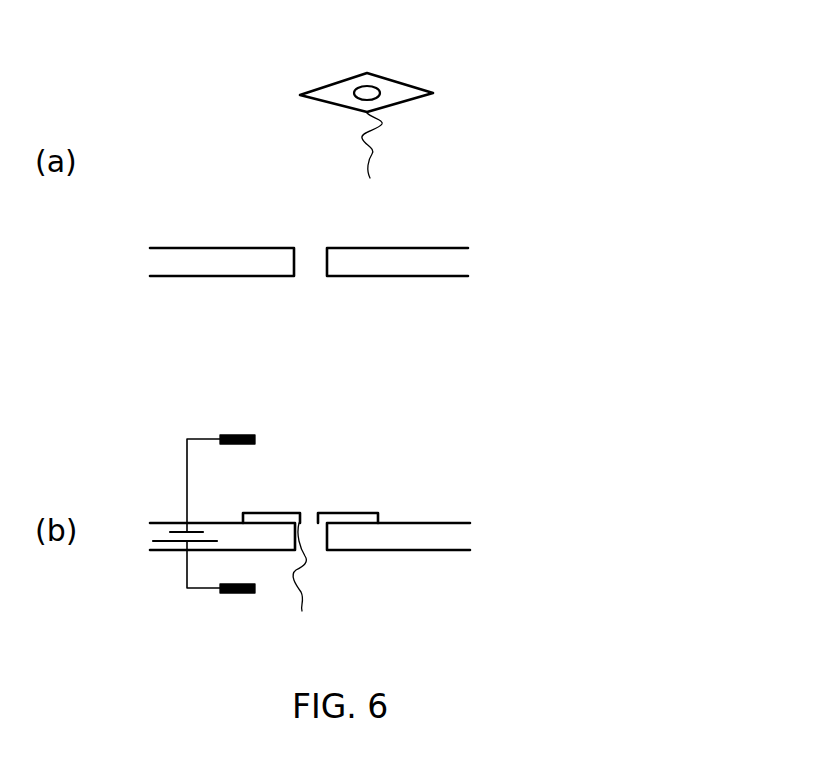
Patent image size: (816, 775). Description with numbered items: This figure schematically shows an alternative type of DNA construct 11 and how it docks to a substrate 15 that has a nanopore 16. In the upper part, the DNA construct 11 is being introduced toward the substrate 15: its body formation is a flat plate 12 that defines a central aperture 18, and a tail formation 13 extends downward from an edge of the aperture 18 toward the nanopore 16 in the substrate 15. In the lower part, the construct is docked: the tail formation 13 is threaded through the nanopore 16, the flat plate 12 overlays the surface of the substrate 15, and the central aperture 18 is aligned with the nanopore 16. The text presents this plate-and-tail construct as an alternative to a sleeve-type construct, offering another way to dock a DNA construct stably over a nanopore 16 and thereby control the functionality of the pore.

The DNA construct 11 is at (296, 52).
The flat plate 12 is at (407, 92).
The tail formation 13 is at (365, 154).
The substrate 15 is at (190, 260).
The nanopore 16 is at (308, 270).
The central aperture 18 is at (372, 87).